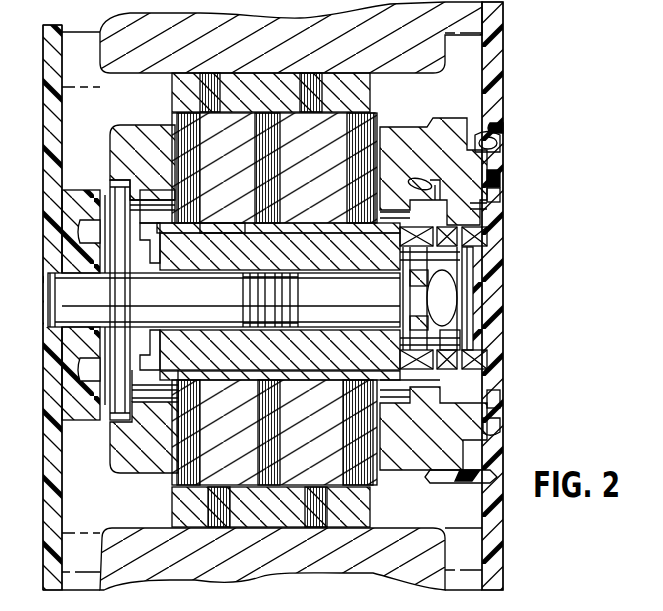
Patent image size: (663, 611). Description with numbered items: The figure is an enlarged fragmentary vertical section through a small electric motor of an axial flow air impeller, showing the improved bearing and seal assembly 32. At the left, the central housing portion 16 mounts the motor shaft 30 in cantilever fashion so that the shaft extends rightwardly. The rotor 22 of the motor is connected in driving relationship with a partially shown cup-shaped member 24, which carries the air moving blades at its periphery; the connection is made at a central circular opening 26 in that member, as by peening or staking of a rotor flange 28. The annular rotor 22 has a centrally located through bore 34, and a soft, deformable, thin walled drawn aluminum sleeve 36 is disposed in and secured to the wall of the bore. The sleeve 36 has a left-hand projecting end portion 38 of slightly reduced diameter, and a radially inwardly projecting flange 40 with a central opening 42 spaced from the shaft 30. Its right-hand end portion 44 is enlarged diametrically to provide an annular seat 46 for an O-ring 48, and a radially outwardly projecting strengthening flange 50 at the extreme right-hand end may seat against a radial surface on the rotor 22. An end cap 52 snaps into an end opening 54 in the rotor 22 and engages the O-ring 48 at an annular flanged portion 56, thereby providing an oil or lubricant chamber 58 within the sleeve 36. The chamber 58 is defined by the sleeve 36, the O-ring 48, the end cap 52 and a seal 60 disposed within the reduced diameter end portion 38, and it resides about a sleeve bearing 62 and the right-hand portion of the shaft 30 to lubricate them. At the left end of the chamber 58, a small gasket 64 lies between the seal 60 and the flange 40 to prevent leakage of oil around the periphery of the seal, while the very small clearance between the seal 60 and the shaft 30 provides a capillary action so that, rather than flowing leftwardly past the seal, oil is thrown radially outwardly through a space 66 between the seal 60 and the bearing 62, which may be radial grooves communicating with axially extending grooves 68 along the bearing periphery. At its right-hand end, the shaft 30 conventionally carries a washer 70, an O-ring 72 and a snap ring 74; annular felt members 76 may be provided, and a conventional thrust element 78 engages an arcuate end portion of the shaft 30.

The central housing portion 16 is at (52, 117).
The rotor 22 is at (482, 83).
The cup-shaped member 24 is at (501, 43).
The central circular opening 26 is at (500, 151).
The rotor flange 28 is at (502, 134).
The motor shaft 30 is at (75, 297).
The bearing and seal assembly 32 is at (238, 215).
The through bore 34 is at (298, 226).
The sleeve 36 is at (199, 221).
The left-hand projecting end portion 38 is at (181, 211).
The radially inwardly projecting flange 40 is at (132, 248).
The central opening 42 is at (165, 355).
The right-hand end portion 44 is at (378, 190).
The annular seat 46 is at (412, 192).
The O-ring 48 is at (488, 203).
The strengthening flange 50 is at (500, 178).
The end cap 52 is at (500, 249).
The end opening 54 is at (500, 425).
The annular flanged portion 56 is at (468, 238).
The lubricant chamber 58 is at (450, 339).
The seal 60 is at (95, 398).
The sleeve bearing 62 is at (330, 376).
The gasket 64 is at (62, 425).
The space 66 is at (210, 221).
The axially extending grooves 68 is at (285, 228).
The washer 70 is at (402, 350).
The O-ring 72 is at (404, 309).
The snap ring 74 is at (482, 376).
The felt members 76 is at (493, 397).
The thrust element 78 is at (467, 363).